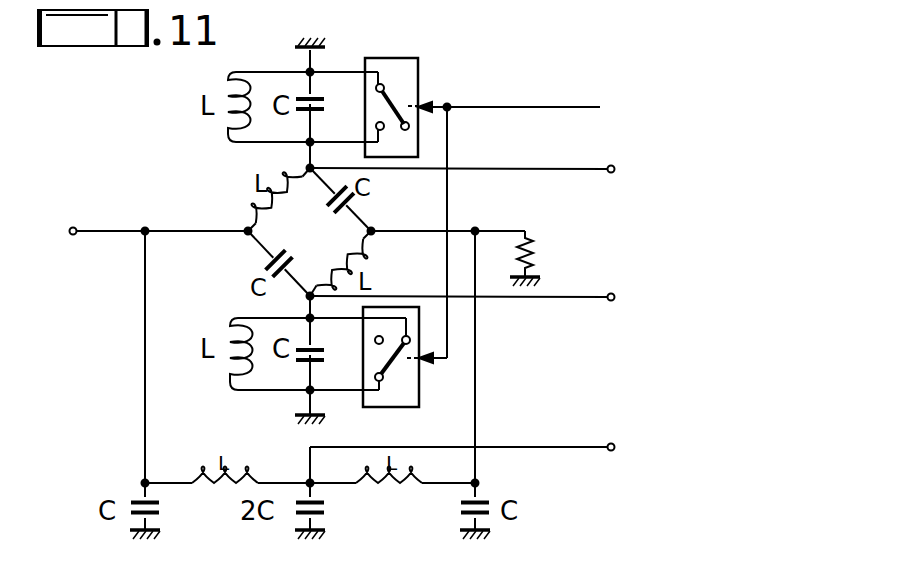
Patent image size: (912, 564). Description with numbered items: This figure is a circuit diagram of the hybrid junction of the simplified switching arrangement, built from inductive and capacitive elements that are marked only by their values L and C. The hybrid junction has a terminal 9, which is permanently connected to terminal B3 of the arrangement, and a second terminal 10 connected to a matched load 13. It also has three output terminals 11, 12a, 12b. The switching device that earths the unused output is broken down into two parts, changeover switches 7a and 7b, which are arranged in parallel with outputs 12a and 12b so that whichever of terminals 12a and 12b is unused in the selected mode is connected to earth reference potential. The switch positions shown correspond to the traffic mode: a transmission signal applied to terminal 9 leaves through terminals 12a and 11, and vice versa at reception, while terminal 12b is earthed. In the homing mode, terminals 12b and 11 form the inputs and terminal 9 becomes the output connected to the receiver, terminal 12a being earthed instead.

The switching device 7a is at (430, 44).
The switching device 7b is at (419, 385).
The terminal 9 is at (73, 227).
The second terminal 10 is at (475, 228).
The output terminal 11 is at (615, 446).
The output terminal 12a is at (615, 168).
The output terminal 12b is at (615, 296).
The matched load 13 is at (533, 258).